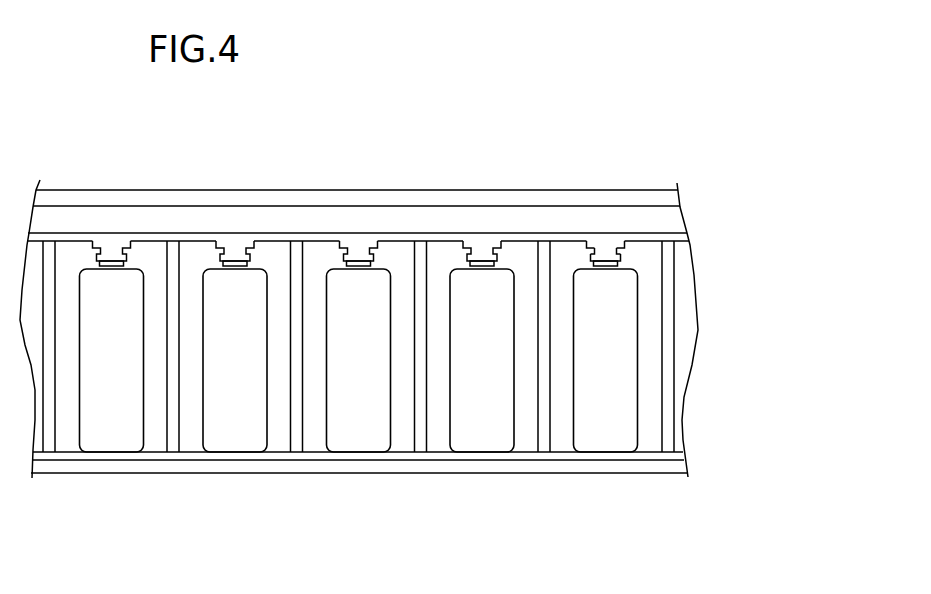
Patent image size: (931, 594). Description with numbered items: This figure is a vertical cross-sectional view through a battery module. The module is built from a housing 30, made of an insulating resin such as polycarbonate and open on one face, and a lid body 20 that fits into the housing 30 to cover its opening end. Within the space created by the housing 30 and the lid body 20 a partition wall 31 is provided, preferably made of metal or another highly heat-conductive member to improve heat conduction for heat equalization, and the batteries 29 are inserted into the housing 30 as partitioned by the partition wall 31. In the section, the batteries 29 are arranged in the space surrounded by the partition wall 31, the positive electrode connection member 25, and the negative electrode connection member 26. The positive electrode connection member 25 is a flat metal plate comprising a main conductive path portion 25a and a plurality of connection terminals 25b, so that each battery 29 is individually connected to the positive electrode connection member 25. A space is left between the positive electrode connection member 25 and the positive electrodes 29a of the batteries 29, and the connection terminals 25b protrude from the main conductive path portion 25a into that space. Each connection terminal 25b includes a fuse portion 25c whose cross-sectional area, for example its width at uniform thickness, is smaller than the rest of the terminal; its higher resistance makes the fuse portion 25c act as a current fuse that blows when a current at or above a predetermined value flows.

The lid body 20 is at (471, 197).
The positive electrode connection member 25 is at (716, 263).
The main conductive path portion 25a is at (647, 238).
The connection terminal 25b is at (623, 260).
The fuse portion 25c is at (603, 253).
The negative electrode connection member 26 is at (673, 457).
The battery 29 is at (617, 351).
The positive electrode 29a is at (587, 243).
The housing 30 is at (243, 462).
The partition wall 31 is at (665, 407).